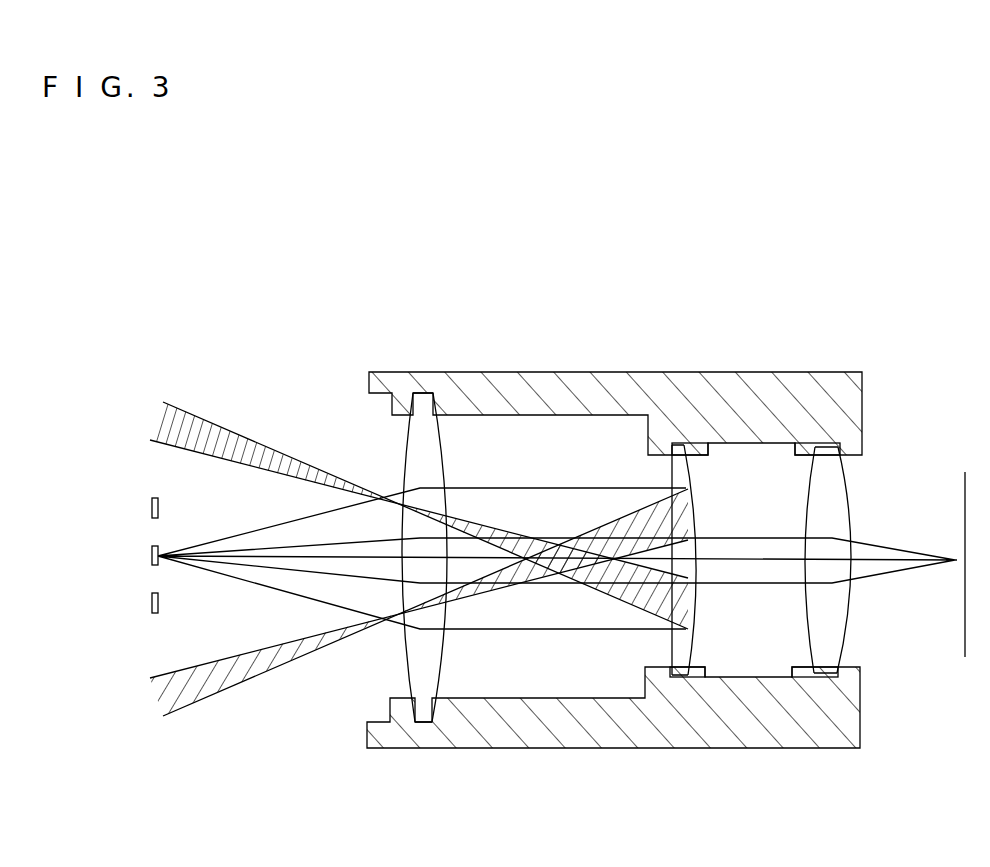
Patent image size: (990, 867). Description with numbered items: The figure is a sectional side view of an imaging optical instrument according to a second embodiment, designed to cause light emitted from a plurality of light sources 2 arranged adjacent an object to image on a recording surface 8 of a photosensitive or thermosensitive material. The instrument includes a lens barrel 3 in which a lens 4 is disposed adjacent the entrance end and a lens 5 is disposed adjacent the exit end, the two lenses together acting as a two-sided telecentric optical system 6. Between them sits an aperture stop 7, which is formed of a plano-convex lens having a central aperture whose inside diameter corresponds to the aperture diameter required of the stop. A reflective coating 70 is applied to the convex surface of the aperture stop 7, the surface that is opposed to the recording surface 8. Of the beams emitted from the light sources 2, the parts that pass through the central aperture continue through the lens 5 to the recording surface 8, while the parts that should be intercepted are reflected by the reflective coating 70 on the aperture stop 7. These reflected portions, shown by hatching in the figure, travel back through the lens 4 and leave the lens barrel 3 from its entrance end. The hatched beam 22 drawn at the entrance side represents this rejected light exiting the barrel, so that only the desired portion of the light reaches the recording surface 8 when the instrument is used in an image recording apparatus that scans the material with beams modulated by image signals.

The light sources 2 is at (151, 504).
The lens barrel 3 is at (652, 737).
The lens 4 is at (433, 393).
The lens 5 is at (827, 458).
The two-sided telecentric optical system 6 is at (650, 280).
The aperture stop 7 is at (673, 565).
The reflective coating 70 is at (683, 473).
The recording surface 8 is at (965, 624).
The light beam 22 is at (217, 676).